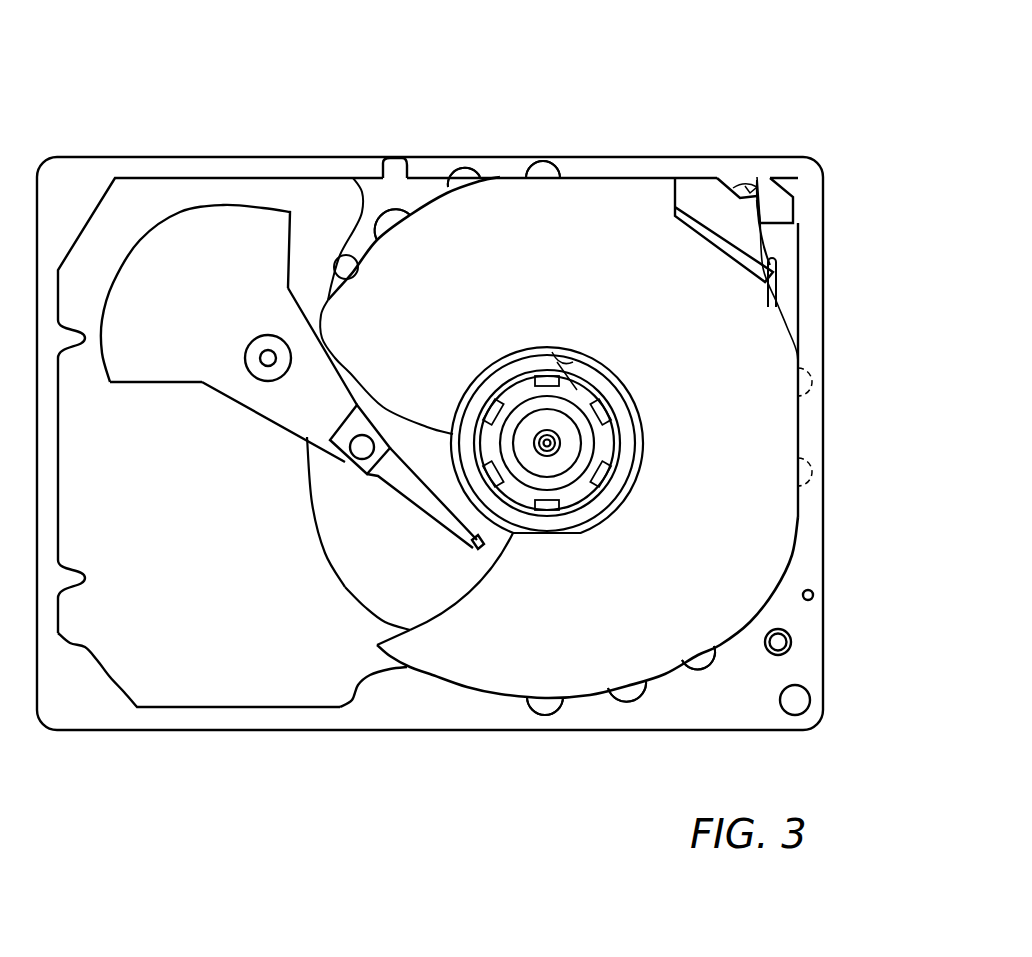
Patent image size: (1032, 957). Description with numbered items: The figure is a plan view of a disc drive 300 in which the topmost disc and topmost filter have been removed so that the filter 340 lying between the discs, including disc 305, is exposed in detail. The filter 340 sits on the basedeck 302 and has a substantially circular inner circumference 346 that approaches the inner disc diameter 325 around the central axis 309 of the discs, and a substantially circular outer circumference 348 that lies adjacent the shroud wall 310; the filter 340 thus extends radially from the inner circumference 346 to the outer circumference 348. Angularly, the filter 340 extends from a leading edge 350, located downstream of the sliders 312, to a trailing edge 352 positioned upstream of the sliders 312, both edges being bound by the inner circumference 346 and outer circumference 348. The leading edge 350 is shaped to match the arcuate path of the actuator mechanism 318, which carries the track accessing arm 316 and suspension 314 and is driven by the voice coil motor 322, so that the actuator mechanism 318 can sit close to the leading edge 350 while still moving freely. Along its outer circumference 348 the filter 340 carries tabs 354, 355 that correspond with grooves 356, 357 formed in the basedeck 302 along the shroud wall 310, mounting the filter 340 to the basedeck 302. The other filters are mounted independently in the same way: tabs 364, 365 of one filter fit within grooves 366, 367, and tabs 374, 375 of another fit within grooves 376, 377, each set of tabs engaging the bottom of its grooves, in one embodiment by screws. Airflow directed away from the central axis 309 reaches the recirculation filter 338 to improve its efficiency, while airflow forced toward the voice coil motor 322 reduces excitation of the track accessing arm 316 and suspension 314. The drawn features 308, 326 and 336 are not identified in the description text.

The disc drive 300 is at (474, 414).
The basedeck 302 is at (806, 542).
The disc 305 is at (337, 502).
The spindle motor 308 is at (545, 431).
The central axis 309 is at (549, 443).
The shroud wall 310 is at (405, 167).
The sliders 312 is at (482, 550).
The suspension 314 is at (437, 508).
The track accessing arm 316 is at (367, 472).
The actuator mechanism 318 is at (334, 355).
The voice coil motor 322 is at (193, 245).
The inner disc diameter 325 is at (467, 477).
The shroud segment 326 is at (360, 592).
The breather filter 336 is at (770, 288).
The recirculation filter 338 is at (798, 223).
The filter 340 is at (740, 448).
The inner circumference 346 is at (583, 533).
The outer circumference 348 is at (380, 653).
The leading edge 350 is at (440, 618).
The trailing edge 352 is at (396, 416).
The tab 354 is at (627, 695).
The tab 355 is at (460, 176).
The groove 356 is at (640, 702).
The groove 357 is at (479, 178).
The tab 364 is at (537, 712).
The tab 365 is at (544, 170).
The groove 366 is at (545, 712).
The groove 367 is at (557, 172).
The tab 374 is at (702, 665).
The tab 375 is at (412, 214).
The groove 376 is at (708, 668).
The groove 377 is at (376, 226).